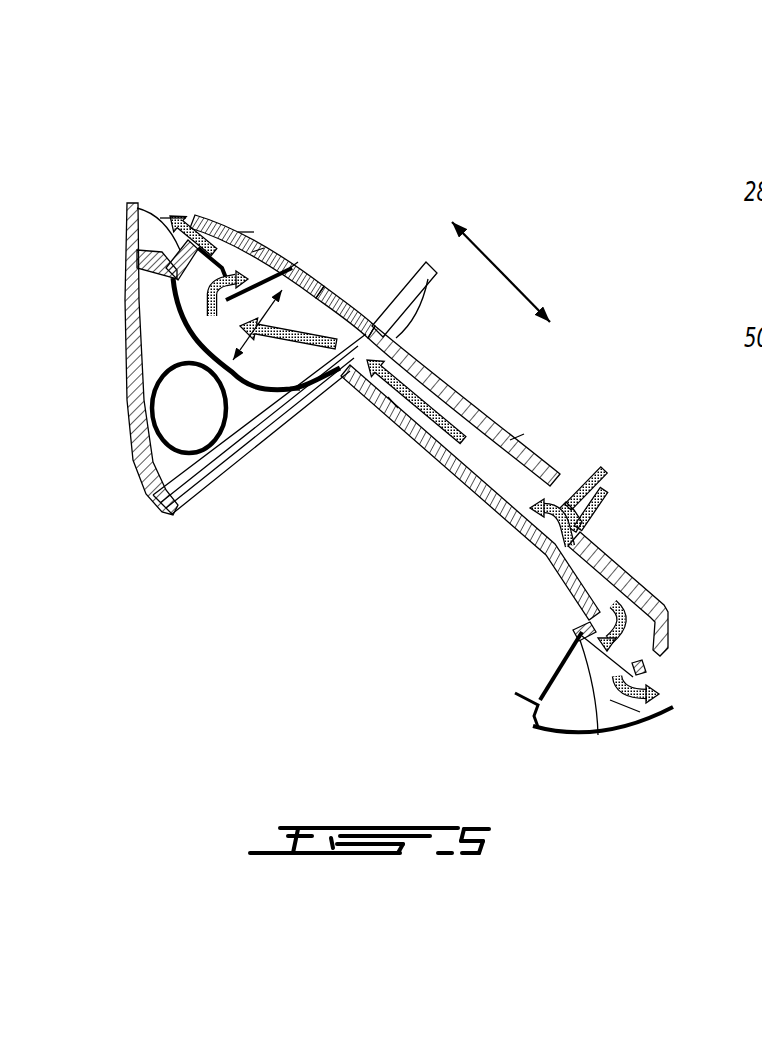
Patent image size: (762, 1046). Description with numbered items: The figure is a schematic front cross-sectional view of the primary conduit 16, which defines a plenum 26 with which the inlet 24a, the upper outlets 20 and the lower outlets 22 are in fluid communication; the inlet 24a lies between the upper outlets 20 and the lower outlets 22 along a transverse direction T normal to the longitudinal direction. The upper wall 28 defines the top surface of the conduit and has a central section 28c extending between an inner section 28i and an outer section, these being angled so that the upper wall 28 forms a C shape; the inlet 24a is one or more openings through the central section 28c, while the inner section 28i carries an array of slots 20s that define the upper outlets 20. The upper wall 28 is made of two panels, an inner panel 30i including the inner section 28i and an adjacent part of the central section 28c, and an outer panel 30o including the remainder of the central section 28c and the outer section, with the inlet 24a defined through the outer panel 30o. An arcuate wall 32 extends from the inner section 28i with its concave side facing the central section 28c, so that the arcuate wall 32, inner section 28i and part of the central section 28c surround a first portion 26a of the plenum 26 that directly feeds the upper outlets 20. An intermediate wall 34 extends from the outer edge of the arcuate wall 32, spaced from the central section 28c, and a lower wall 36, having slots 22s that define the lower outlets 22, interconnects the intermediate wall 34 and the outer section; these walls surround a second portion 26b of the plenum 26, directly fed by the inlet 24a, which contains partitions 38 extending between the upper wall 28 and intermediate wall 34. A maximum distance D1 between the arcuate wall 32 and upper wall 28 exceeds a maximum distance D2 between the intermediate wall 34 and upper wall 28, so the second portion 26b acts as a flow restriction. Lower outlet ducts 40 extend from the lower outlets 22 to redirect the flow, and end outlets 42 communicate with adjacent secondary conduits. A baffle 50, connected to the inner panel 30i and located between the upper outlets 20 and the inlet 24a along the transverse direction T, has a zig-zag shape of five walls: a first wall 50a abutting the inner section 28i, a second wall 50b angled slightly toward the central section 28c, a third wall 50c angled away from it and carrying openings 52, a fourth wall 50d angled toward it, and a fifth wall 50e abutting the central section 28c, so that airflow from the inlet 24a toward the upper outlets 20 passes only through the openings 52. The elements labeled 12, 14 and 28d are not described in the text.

The vehicle 12 is at (180, 217).
The vehicle body 14 is at (660, 695).
The primary conduit 16 is at (284, 228).
The upper outlets 20 is at (202, 196).
The slots 20s is at (193, 222).
The lower outlets 22 is at (532, 678).
The slots 22s is at (592, 668).
The inlet 24a is at (547, 494).
The plenum 26 is at (376, 477).
The first portion of the plenum 26a is at (308, 393).
The second portion of the plenum 26b is at (490, 486).
The upper wall 28 is at (330, 288).
The inner section 28i is at (133, 205).
The central section 28c is at (428, 364).
The distal wall portion 28d is at (663, 657).
The inner panel 30i is at (254, 251).
The outer panel 30o is at (516, 436).
The arcuate wall 32 is at (270, 393).
The intermediate wall 34 is at (394, 405).
The lower wall 36 is at (596, 730).
The partitions 38 is at (378, 316).
The lower outlet duct 40 is at (620, 712).
The end outlets 42 is at (306, 332).
The baffle 50 is at (191, 278).
The first wall 50a is at (138, 250).
The second wall 50b is at (205, 242).
The third wall 50c is at (137, 418).
The fourth wall 50d is at (248, 258).
The fifth wall 50e is at (294, 272).
The openings 52 is at (247, 232).
The maximum distance D1 is at (233, 362).
The maximum distance D2 is at (409, 385).
The transverse direction T is at (503, 268).